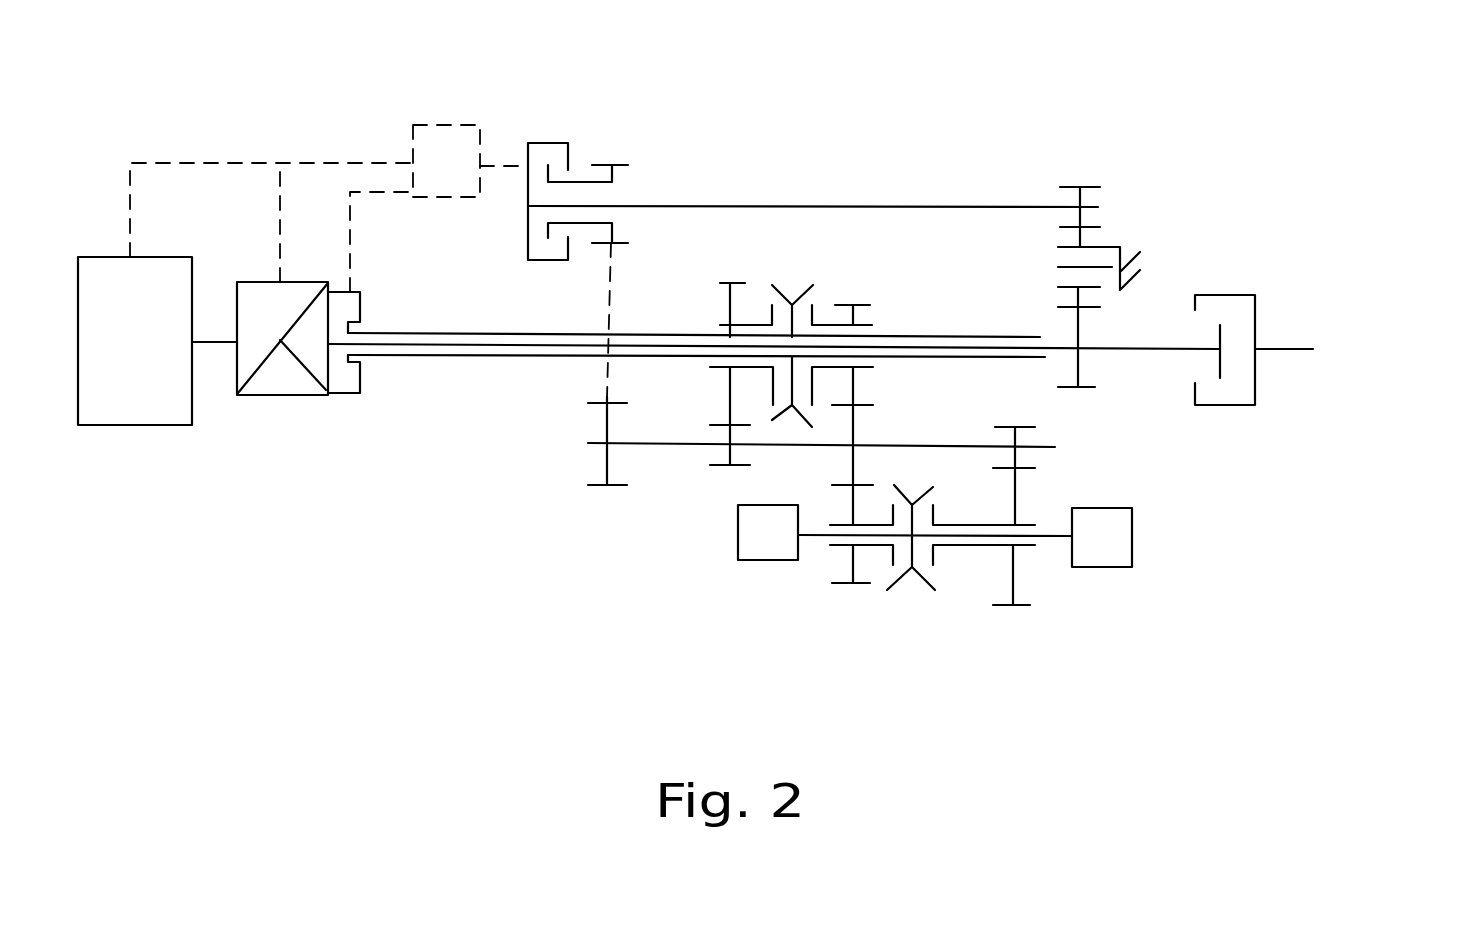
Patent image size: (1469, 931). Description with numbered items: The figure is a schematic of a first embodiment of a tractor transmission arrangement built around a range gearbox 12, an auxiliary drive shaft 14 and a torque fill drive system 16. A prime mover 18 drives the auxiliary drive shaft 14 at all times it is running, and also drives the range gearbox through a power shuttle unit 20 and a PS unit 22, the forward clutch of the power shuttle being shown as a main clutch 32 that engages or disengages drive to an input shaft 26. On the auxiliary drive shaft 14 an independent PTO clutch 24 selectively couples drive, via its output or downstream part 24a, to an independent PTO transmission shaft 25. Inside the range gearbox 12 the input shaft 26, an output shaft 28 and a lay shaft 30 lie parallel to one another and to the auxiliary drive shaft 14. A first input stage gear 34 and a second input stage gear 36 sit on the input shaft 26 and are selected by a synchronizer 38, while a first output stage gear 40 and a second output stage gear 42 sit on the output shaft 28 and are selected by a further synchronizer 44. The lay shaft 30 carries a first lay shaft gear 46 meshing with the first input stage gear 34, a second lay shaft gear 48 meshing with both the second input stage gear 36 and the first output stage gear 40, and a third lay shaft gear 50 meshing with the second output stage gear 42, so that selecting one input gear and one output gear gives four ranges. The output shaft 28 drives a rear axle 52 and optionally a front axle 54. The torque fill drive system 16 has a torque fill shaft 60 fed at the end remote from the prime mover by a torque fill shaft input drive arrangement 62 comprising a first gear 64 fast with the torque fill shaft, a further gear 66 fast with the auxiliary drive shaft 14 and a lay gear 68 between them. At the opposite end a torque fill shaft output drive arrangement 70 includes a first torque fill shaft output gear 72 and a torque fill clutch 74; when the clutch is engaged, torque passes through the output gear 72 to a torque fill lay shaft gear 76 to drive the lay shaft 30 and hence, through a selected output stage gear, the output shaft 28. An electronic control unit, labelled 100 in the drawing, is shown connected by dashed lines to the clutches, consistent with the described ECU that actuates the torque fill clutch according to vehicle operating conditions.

The range gearbox 12 is at (536, 497).
The auxiliary drive shaft 14 is at (1162, 348).
The torque fill drive system 16 is at (995, 147).
The prime mover 18 is at (155, 364).
The power shuttle unit 20 is at (278, 337).
The PS unit 22 is at (322, 394).
The independent PTO clutch 24 is at (1320, 336).
The output or downstream part of the independent PTO clutch 24a is at (1257, 325).
The independent PTO transmission shaft 25 is at (1290, 352).
The input shaft 26 is at (947, 338).
The output shaft 28 is at (1053, 537).
The lay shaft 30 is at (934, 445).
The main clutch 32 is at (360, 305).
The first input stage gear 34 is at (732, 283).
The second input stage gear 36 is at (870, 304).
The synchronizer 38 is at (795, 303).
The first output stage gear 40 is at (852, 585).
The second output stage gear 42 is at (1022, 608).
The further synchronizer 44 is at (903, 583).
The first lay shaft gear 46 is at (710, 463).
The second lay shaft gear 48 is at (857, 425).
The third lay shaft gear 50 is at (1022, 427).
The rear axle 52 is at (1118, 537).
The front axle 54 is at (750, 537).
The torque fill shaft 60 is at (733, 206).
The torque fill shaft input drive arrangement 62 is at (1131, 174).
The first gear 64 is at (1090, 187).
The further gear 66 is at (1082, 387).
The lay gear 68 is at (1097, 248).
The torque fill shaft output drive arrangement 70 is at (603, 150).
The first torque fill shaft output gear 72 is at (607, 163).
The torque fill clutch 74 is at (548, 145).
The torque fill lay shaft gear 76 is at (604, 487).
The electronic control unit 100 is at (423, 124).